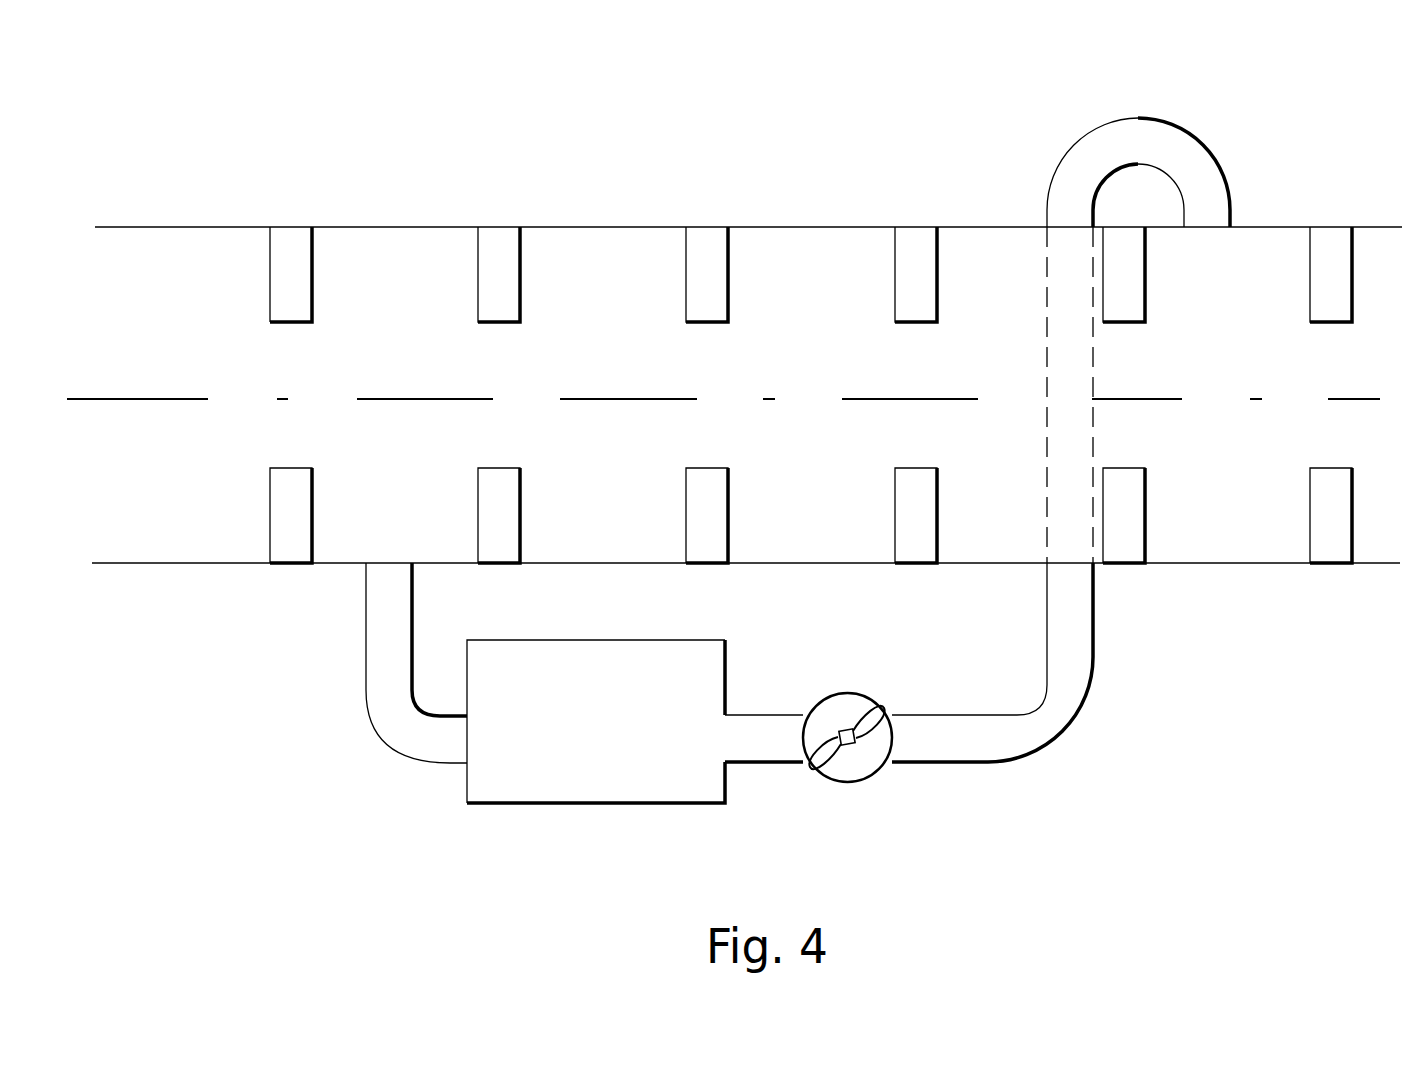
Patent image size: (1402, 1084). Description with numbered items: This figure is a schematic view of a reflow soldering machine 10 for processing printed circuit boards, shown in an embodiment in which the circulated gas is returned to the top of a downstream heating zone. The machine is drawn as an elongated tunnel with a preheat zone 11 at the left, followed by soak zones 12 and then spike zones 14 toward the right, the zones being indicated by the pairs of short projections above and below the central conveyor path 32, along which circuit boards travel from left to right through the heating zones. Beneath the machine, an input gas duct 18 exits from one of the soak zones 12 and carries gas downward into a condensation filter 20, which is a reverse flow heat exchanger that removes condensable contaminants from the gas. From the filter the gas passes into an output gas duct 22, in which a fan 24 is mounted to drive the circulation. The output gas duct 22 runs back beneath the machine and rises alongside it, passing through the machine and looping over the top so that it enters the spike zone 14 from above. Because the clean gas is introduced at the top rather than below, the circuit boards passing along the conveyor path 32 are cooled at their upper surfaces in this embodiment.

The reflow soldering machine 10 is at (737, 163).
The preheat zone 11 is at (158, 282).
The soak zone 12 is at (388, 272).
The spike zone 14 is at (1267, 262).
The input gas duct 18 is at (367, 645).
The condensation filter 20 is at (594, 797).
The output gas duct 22 is at (1175, 133).
The fan 24 is at (848, 692).
The conveyor path 32 is at (95, 401).